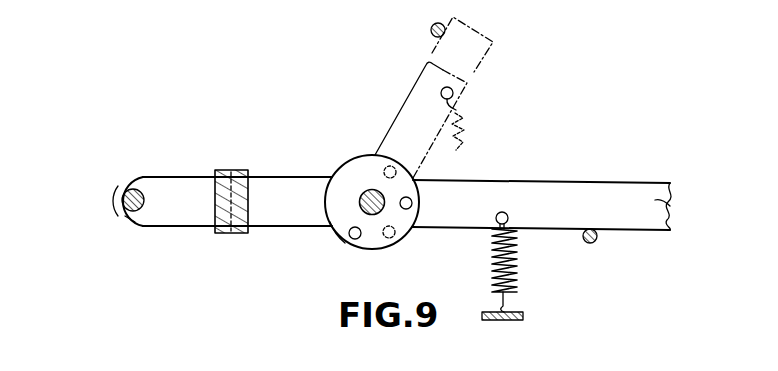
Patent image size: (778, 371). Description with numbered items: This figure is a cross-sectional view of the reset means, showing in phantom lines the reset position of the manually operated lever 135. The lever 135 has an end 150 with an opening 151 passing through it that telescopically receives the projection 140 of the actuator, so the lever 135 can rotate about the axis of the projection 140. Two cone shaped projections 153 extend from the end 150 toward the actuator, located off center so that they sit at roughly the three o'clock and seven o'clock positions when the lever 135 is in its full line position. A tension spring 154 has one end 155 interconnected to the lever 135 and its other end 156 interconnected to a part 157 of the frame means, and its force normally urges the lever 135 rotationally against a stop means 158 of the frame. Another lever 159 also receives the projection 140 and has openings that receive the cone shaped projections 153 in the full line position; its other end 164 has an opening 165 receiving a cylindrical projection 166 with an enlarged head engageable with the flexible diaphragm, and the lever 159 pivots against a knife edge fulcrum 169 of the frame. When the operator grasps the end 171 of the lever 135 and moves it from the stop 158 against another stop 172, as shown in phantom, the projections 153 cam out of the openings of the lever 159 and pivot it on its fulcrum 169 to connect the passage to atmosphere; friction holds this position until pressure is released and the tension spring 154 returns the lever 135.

The lever 135 is at (538, 190).
The projection 140 is at (368, 190).
The end 150 is at (341, 229).
The opening 151 is at (360, 203).
The cone shaped projections 153 is at (353, 241).
The tension spring 154 is at (517, 265).
The end 155 is at (507, 223).
The other end 156 is at (500, 302).
The part 157 is at (493, 320).
The stop means 158 is at (597, 240).
The lever 159 is at (173, 188).
The other end 164 is at (118, 199).
The opening 165 is at (135, 192).
The cylindrical projection 166 is at (130, 212).
The knife edge fulcrum 169 is at (241, 172).
The end 171 is at (655, 200).
The stop 172 is at (431, 30).